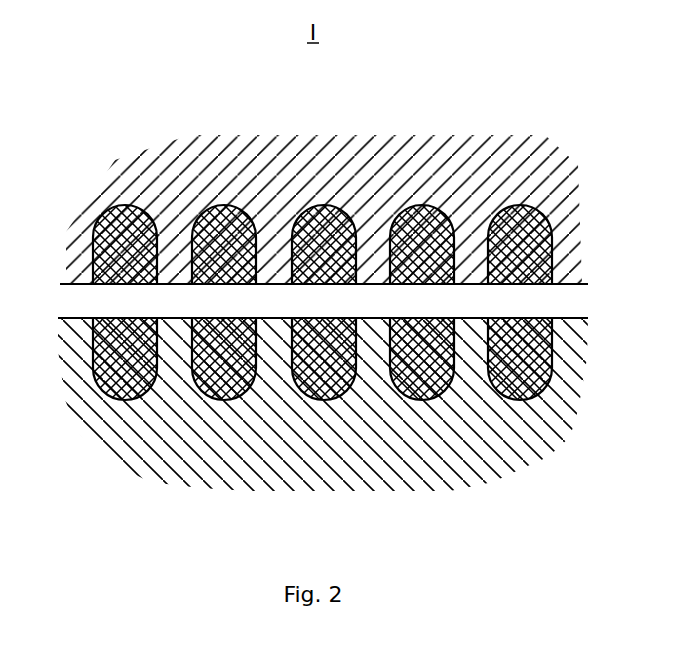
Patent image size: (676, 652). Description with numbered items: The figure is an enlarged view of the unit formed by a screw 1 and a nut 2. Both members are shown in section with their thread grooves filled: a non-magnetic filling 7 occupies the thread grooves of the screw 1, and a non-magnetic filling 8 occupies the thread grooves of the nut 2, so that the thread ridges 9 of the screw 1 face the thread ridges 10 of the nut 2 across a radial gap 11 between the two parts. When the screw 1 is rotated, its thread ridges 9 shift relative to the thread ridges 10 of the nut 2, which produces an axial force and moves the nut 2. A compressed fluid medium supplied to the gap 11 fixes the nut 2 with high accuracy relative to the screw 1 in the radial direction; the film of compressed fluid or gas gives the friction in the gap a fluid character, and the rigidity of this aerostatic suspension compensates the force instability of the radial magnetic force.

The screw 1 is at (175, 440).
The nut 2 is at (207, 167).
The non-magnetic filling of the thread grooves of the screw 7 is at (237, 395).
The non-magnetic filling of the thread grooves of the nut 8 is at (120, 238).
The thread ridges of the screw 9 is at (373, 338).
The thread ridges of the nut 10 is at (472, 260).
The radial gap 11 is at (272, 302).